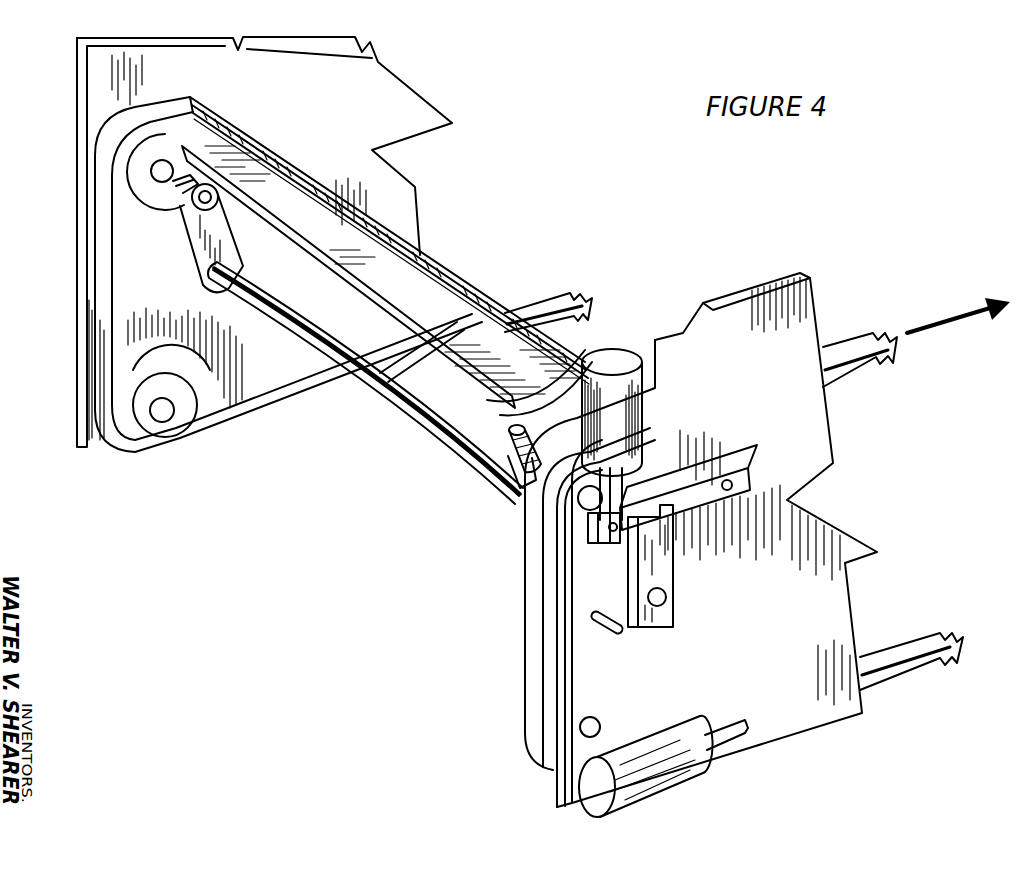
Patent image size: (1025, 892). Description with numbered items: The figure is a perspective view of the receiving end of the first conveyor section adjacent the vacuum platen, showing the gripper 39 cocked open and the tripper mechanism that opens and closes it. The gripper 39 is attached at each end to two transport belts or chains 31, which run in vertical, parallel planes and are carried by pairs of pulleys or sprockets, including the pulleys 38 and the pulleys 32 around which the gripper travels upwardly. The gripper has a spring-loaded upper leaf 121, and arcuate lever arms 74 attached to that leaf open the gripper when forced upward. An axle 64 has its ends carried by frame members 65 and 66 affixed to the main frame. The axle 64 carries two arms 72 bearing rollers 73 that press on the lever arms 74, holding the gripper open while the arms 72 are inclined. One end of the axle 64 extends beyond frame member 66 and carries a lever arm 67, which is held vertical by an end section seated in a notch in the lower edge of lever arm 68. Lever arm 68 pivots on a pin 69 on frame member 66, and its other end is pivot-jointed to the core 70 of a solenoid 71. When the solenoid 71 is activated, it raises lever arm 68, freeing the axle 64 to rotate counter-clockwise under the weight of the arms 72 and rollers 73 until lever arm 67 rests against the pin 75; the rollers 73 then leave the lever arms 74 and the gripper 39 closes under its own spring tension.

The transport belts or chains 31 is at (548, 298).
The pulleys or sprockets 32 is at (147, 212).
The pulleys or sprockets 38 is at (162, 425).
The copy sheet gripper 39 is at (435, 262).
The axle 64 is at (437, 448).
The frame member 65 is at (120, 26).
The frame member 66 is at (810, 507).
The lever arm 67 is at (660, 568).
The lever arm 68 is at (688, 480).
The pin 69 is at (735, 486).
The core 70 is at (640, 485).
The solenoid 71 is at (645, 420).
The arms 72 is at (200, 272).
The rollers 73 is at (218, 198).
The arcuate lever arms 74 is at (172, 184).
The pin 75 is at (622, 630).
The leaf 121 is at (430, 308).